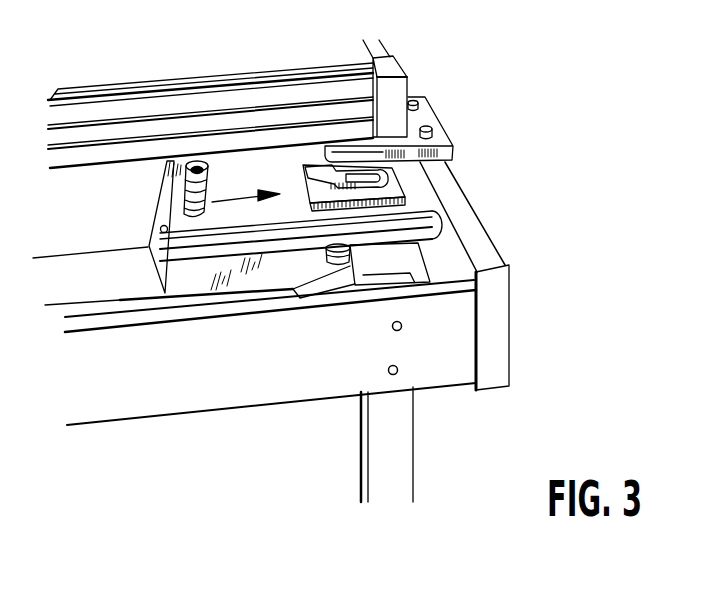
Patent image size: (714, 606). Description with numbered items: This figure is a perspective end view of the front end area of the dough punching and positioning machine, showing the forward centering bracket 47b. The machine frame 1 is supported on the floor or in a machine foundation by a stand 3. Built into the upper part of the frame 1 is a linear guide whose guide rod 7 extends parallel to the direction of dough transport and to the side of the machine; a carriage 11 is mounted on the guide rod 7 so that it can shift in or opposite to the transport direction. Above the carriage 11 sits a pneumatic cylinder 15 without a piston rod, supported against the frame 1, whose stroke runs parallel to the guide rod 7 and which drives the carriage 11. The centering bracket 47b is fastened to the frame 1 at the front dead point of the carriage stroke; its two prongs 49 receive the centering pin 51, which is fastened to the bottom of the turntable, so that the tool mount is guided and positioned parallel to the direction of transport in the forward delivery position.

The frame 1 is at (163, 395).
The stand 3 is at (403, 436).
The guide rod 7 is at (408, 225).
The carriage 11 is at (102, 182).
The pneumatic cylinder 15 is at (295, 59).
The centering bracket 47b is at (405, 193).
The prongs 49 is at (323, 203).
The centering pin 51 is at (213, 180).